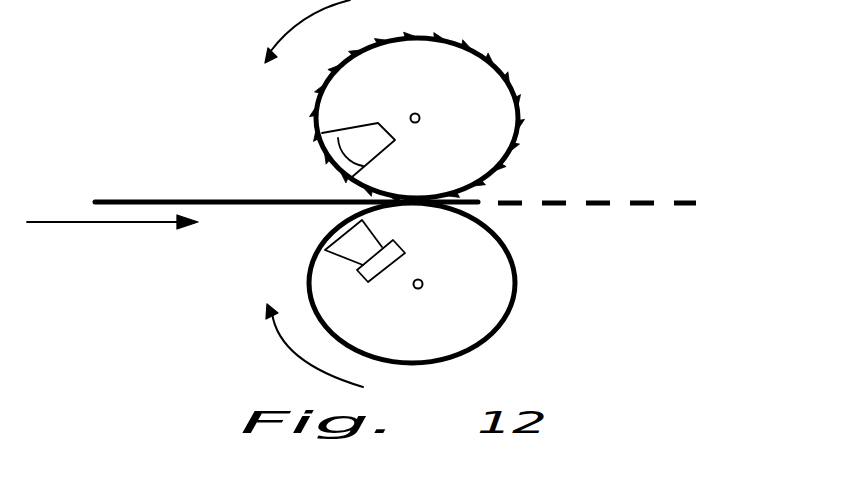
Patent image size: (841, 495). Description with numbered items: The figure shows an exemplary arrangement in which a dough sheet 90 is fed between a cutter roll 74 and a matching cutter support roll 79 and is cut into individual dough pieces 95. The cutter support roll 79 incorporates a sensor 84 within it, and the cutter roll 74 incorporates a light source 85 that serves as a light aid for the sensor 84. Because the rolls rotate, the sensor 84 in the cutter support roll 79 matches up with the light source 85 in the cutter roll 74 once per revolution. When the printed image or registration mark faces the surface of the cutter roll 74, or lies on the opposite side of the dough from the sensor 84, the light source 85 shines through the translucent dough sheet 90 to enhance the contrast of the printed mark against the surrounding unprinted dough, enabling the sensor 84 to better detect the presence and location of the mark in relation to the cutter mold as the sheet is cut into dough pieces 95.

The cutter roll 74 is at (490, 119).
The cutter support roll 79 is at (483, 302).
The sensor 84 is at (380, 262).
The light source 85 is at (372, 133).
The dough sheet 90 is at (135, 198).
The individual dough pieces 95 is at (523, 203).